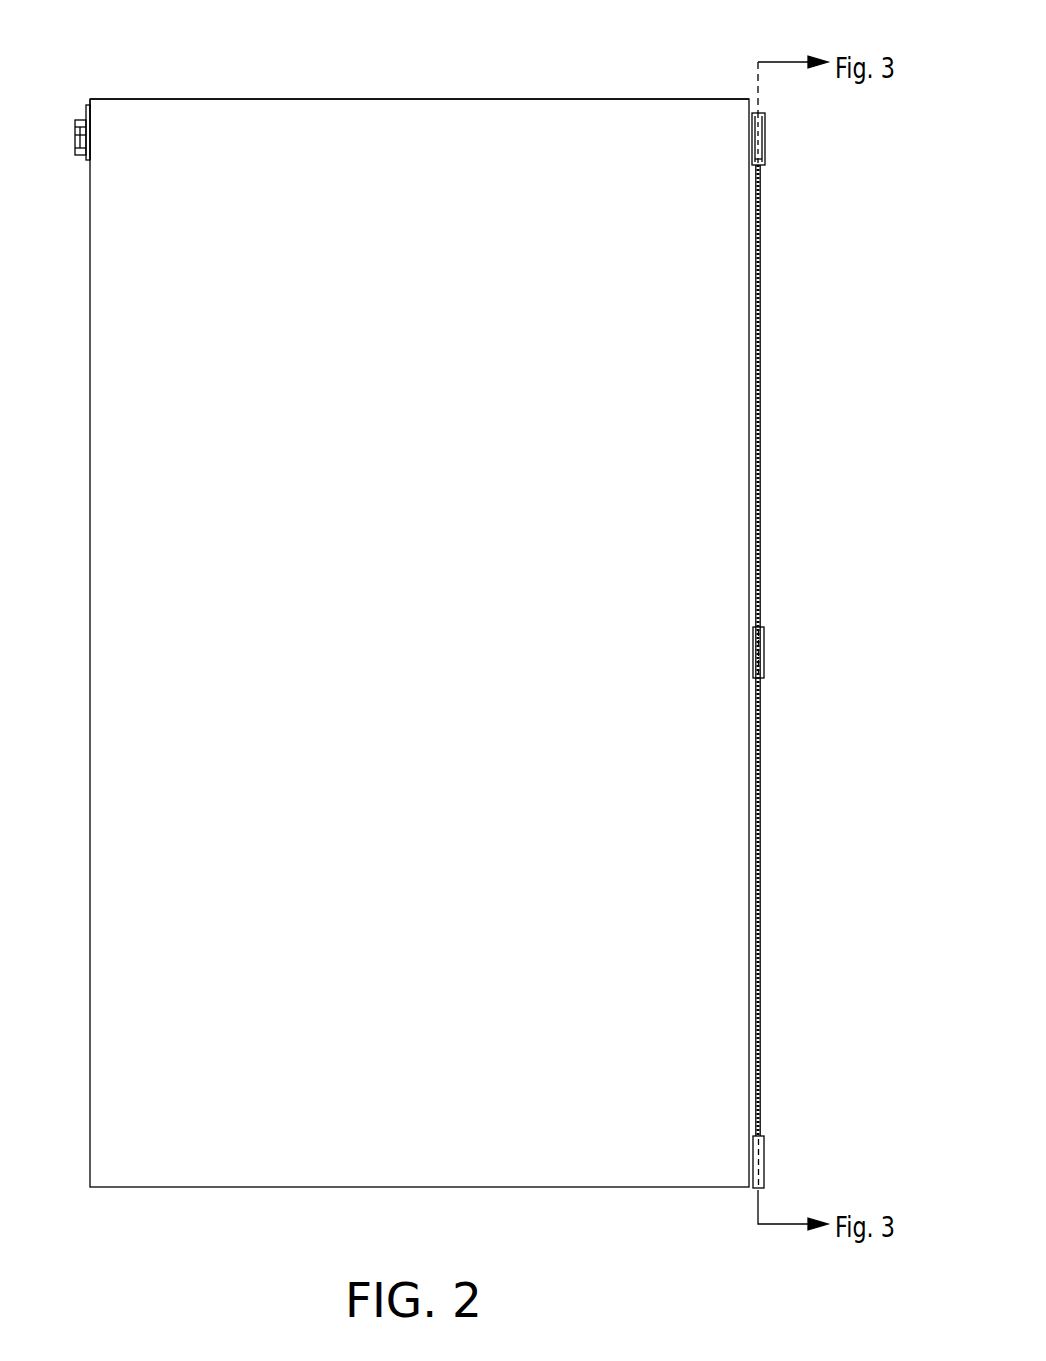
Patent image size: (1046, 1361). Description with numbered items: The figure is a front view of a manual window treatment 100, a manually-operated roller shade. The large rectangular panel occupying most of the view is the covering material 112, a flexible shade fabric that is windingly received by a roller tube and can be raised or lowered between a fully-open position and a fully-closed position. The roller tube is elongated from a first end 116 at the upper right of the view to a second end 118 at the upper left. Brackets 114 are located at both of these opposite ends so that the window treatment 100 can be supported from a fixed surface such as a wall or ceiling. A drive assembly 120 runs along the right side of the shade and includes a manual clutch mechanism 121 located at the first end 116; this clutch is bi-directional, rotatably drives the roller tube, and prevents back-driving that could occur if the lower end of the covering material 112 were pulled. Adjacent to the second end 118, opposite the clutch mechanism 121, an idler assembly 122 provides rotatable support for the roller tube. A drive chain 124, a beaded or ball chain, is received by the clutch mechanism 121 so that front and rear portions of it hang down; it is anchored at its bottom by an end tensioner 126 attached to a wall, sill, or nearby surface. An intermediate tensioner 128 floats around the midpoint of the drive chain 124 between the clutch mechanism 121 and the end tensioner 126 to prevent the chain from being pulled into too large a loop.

The manual window treatment 100 is at (323, 32).
The covering material 112 is at (442, 438).
The brackets 114 is at (75, 154).
The first end 116 is at (750, 99).
The second end 118 is at (90, 99).
The drive assembly 120 is at (826, 650).
The manual clutch mechanism 121 is at (760, 160).
The idler assembly 122 is at (75, 127).
The drive chain 124 is at (760, 358).
The end tensioner 126 is at (765, 1163).
The intermediate tensioner 128 is at (765, 652).